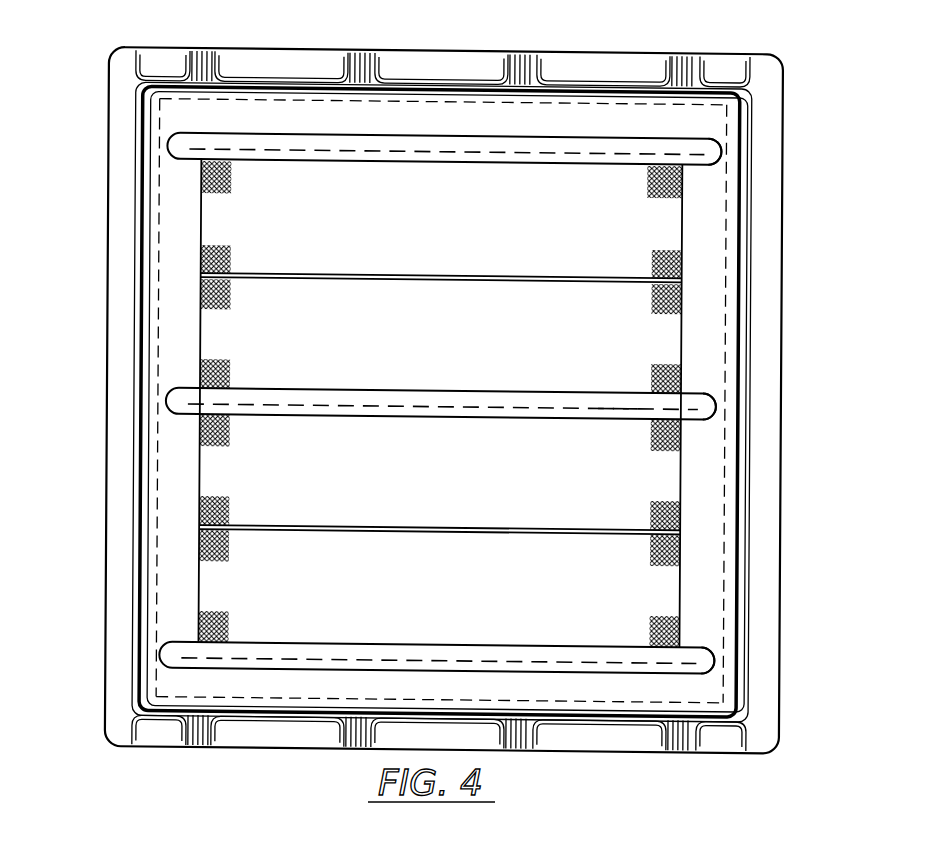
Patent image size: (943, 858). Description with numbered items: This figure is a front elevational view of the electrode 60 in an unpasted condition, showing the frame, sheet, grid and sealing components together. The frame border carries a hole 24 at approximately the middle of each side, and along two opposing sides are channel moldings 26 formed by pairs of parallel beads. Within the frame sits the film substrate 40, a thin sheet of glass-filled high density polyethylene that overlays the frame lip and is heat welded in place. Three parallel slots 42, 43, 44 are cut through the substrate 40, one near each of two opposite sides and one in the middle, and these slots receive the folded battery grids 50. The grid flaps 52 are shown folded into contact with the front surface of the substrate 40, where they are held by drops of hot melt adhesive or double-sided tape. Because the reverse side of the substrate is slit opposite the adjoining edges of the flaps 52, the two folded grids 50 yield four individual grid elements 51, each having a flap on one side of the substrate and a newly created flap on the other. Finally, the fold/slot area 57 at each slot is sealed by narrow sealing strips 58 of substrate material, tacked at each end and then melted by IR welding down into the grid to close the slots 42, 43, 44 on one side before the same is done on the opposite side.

The hole 24 is at (116, 398).
The channel moldings 26 is at (363, 46).
The film substrate 40 is at (175, 246).
The slot 42 is at (683, 142).
The slot 43 is at (616, 398).
The slot 44 is at (735, 652).
The folded grids 50 is at (194, 454).
The grid elements 51 is at (678, 203).
The grid flaps 52 is at (205, 292).
The fold/slot area 57 is at (724, 147).
The sealing strips 58 is at (172, 140).
The electrode 60 is at (98, 328).